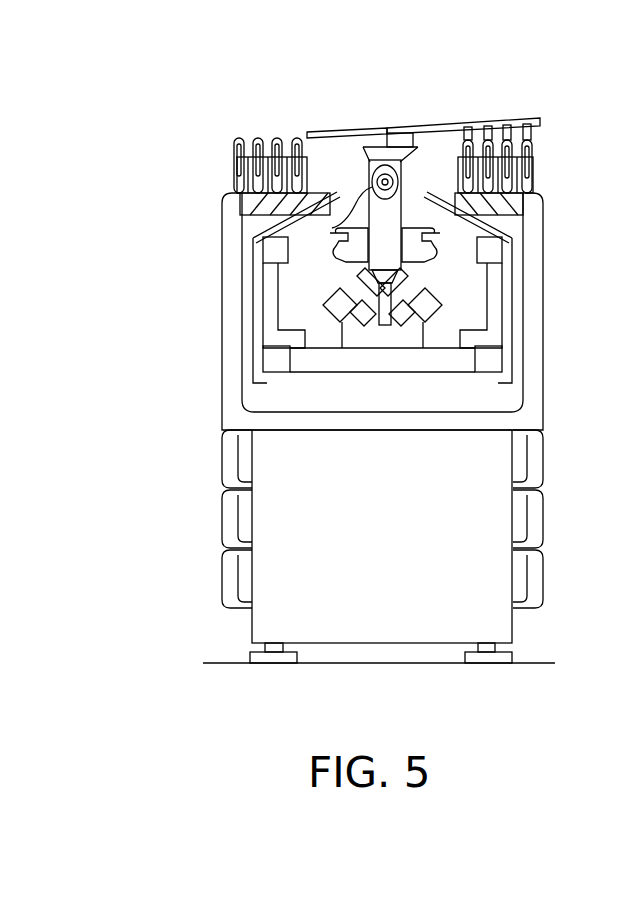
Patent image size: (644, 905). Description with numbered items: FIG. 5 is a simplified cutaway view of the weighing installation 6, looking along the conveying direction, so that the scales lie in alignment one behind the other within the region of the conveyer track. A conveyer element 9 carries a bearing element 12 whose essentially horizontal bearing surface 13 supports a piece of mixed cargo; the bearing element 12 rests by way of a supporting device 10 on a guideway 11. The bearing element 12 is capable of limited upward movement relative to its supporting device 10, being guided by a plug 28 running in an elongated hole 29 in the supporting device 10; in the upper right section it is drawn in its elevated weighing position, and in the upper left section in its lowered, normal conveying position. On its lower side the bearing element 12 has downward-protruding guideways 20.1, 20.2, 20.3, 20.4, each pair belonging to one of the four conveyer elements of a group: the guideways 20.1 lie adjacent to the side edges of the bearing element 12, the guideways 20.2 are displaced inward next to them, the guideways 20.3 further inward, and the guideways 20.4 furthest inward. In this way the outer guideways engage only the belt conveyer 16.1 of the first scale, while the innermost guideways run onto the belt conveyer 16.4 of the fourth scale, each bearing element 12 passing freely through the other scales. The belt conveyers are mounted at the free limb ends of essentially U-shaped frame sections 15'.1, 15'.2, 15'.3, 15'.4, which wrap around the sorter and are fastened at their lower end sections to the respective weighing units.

The weighing installation 6 is at (186, 455).
The conveyer element 9 is at (476, 88).
The supporting device 10 is at (407, 194).
The guideway 11 is at (320, 292).
The bearing element 12 is at (388, 128).
The bearing surface 13 is at (312, 120).
The frame section 15'.1 is at (424, 311).
The frame section 15'.2 is at (424, 459).
The frame section 15'.3 is at (424, 519).
The frame section 15'.4 is at (424, 579).
The belt conveyer 16.1 is at (226, 158).
The belt conveyer 16.4 is at (297, 136).
The guideway 20.1 is at (531, 130).
The guideway 20.2 is at (506, 125).
The guideway 20.3 is at (488, 133).
The guideway 20.4 is at (467, 126).
The plug 28 is at (338, 236).
The elongated hole 29 is at (373, 177).